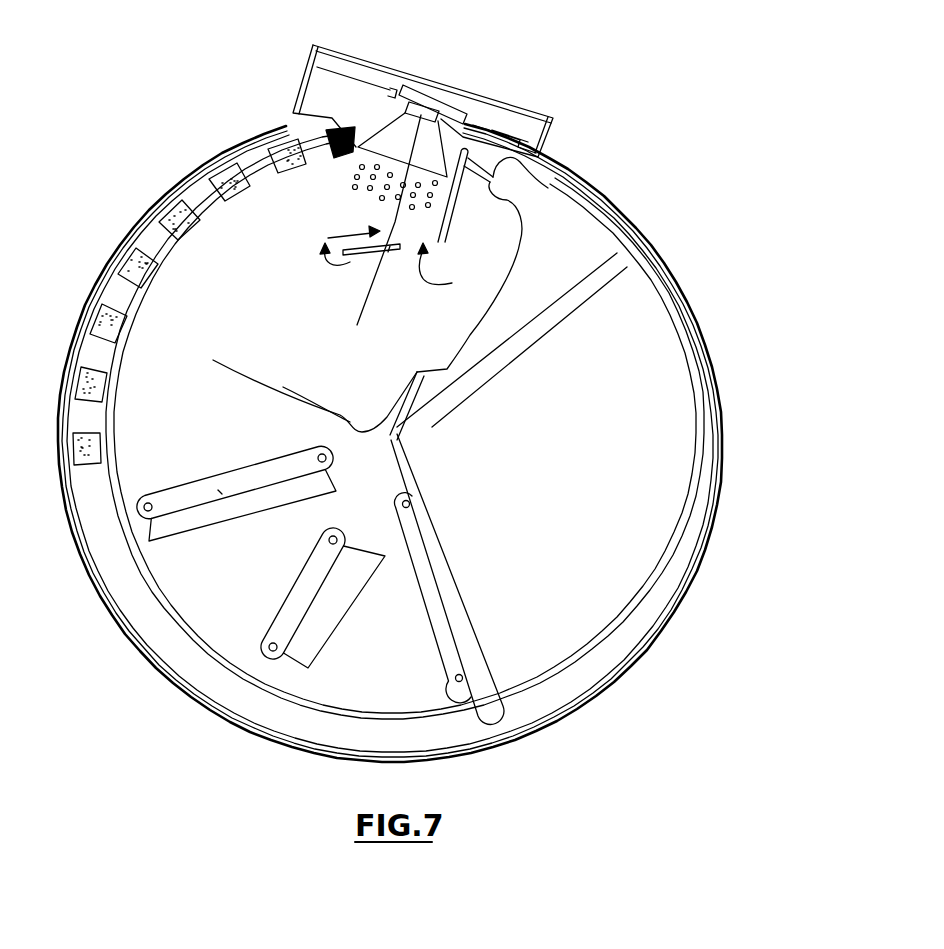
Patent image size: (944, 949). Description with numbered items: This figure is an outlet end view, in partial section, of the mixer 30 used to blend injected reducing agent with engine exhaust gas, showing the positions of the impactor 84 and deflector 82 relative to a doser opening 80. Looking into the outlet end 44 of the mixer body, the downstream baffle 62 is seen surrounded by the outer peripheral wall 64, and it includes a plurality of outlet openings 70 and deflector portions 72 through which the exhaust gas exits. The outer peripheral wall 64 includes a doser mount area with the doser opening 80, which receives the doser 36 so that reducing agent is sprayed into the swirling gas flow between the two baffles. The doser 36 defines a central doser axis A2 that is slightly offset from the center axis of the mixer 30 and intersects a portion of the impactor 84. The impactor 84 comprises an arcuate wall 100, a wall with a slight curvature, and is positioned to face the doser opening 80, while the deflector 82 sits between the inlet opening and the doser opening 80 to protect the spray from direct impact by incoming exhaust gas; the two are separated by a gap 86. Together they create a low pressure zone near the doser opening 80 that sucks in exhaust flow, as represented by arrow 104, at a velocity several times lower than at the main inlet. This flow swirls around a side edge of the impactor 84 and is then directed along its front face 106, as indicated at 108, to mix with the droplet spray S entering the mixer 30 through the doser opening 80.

The mixer 30 is at (730, 271).
The doser 36 is at (447, 118).
The outlet end 44 is at (80, 322).
The downstream baffle 62 is at (128, 412).
The outer peripheral wall 64 is at (238, 148).
The outlet openings 70 is at (178, 527).
The deflector portions 72 is at (220, 492).
The doser opening 80 is at (370, 115).
The deflector 82 is at (447, 224).
The impactor 84 is at (363, 255).
The gap 86 is at (449, 269).
The arcuate wall 100 is at (388, 252).
The arrow indicating sucked exhaust flow 104 is at (322, 265).
The front face 106 is at (437, 209).
The arrow indicating flow along front face 108 is at (357, 234).
The doser spray S is at (315, 130).
The central doser axis A2 is at (390, 215).